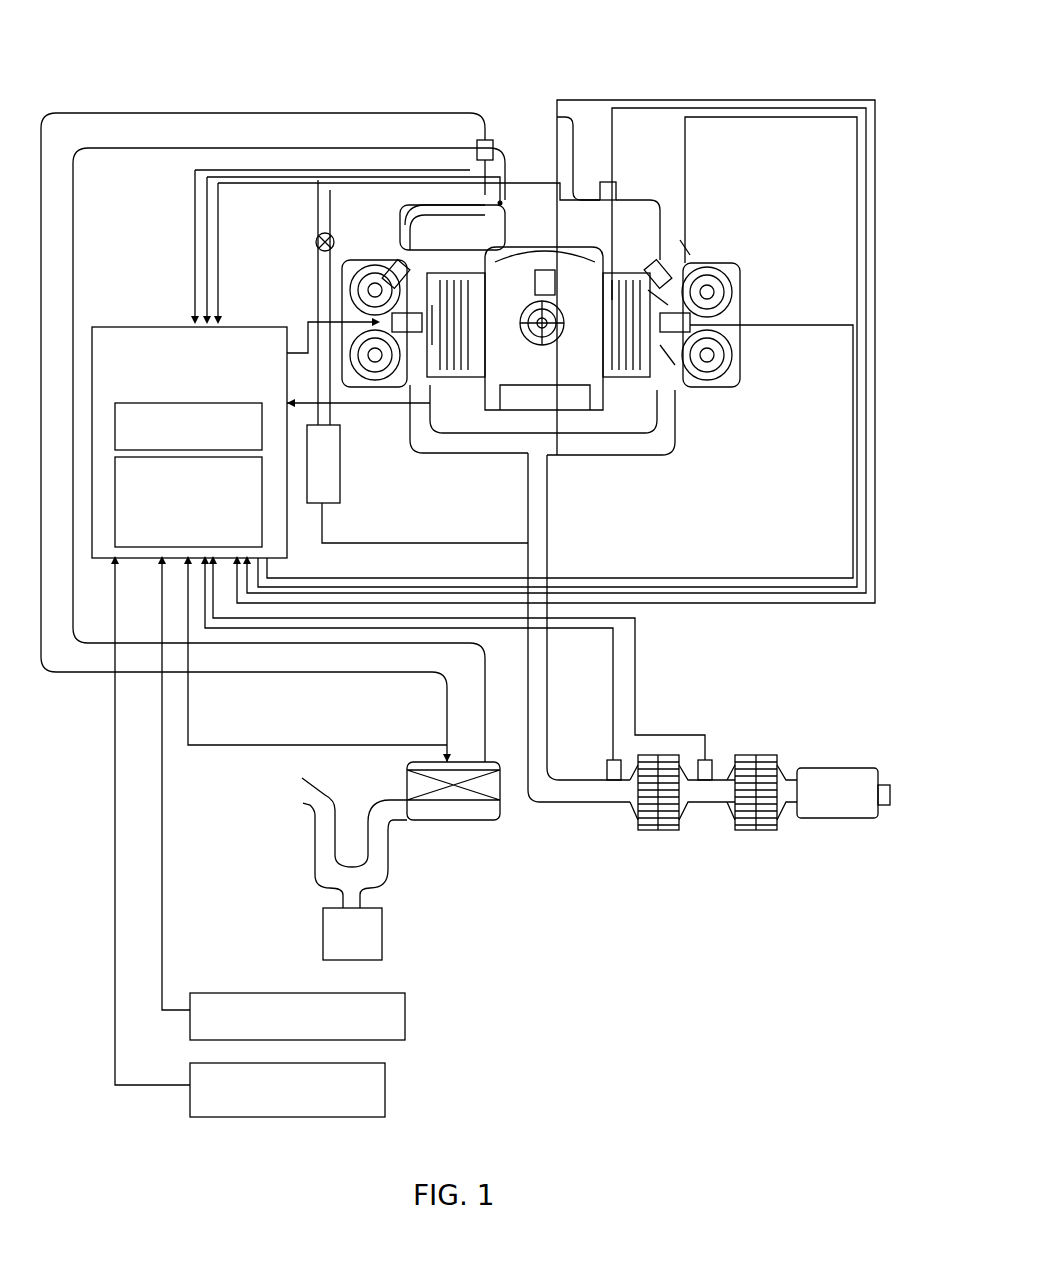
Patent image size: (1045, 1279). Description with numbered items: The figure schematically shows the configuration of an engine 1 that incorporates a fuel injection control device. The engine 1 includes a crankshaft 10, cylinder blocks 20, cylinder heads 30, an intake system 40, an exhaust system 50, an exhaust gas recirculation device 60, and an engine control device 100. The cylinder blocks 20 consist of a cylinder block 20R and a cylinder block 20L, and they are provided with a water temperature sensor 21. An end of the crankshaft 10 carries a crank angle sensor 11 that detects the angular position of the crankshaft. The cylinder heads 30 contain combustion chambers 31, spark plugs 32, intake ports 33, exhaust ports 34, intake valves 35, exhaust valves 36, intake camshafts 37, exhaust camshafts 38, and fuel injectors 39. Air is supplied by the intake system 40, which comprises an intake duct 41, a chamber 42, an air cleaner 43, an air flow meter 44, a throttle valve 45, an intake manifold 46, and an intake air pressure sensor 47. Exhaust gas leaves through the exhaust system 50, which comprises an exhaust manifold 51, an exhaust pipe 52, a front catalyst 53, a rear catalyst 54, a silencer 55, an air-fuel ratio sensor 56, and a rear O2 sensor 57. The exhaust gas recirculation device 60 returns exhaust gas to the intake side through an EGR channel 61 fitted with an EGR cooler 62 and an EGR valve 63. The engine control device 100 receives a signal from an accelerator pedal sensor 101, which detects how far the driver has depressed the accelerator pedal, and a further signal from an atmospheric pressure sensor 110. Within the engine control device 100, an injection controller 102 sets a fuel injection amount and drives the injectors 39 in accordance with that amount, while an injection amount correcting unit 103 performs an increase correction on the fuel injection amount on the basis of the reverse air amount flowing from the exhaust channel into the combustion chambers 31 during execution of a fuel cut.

The engine 1 is at (862, 78).
The crankshaft 10 is at (545, 285).
The crank angle sensor 11 is at (555, 330).
The cylinder blocks 20 is at (445, 250).
The cylinder block 20R is at (490, 400).
The cylinder block 20L is at (650, 385).
The water temperature sensor 21 is at (455, 390).
The cylinder heads 30 is at (360, 262).
The combustion chambers 31 is at (655, 285).
The spark plugs 32 is at (700, 318).
The intake ports 33 is at (668, 300).
The exhaust ports 34 is at (690, 383).
The intake valves 35 is at (688, 252).
The exhaust valves 36 is at (735, 380).
The intake camshafts 37 is at (708, 292).
The exhaust camshafts 38 is at (708, 355).
The fuel injectors 39 is at (675, 360).
The intake system 40 is at (92, 98).
The intake duct 41 is at (410, 672).
The chamber 42 is at (323, 928).
The air cleaner 43 is at (460, 802).
The air flow meter 44 is at (475, 795).
The throttle valve 45 is at (468, 128).
The intake manifold 46 is at (500, 200).
The intake air pressure sensor 47 is at (607, 182).
The exhaust system 50 is at (732, 737).
The exhaust manifold 51 is at (600, 350).
The exhaust pipe 52 is at (575, 802).
The front catalyst 53 is at (665, 828).
The rear catalyst 54 is at (757, 828).
The silencer 55 is at (838, 817).
The air-fuel ratio sensor 56 is at (613, 775).
The rear O2 sensor 57 is at (705, 775).
The exhaust gas recirculation device 60 is at (250, 220).
The EGR channel 61 is at (318, 298).
The EGR cooler 62 is at (338, 487).
The EGR valve 63 is at (316, 240).
The engine control device 100 is at (165, 327).
The accelerator pedal sensor 101 is at (405, 1005).
The injection controller 102 is at (130, 403).
The injection amount correcting unit 103 is at (115, 540).
The atmospheric pressure sensor 110 is at (385, 1080).